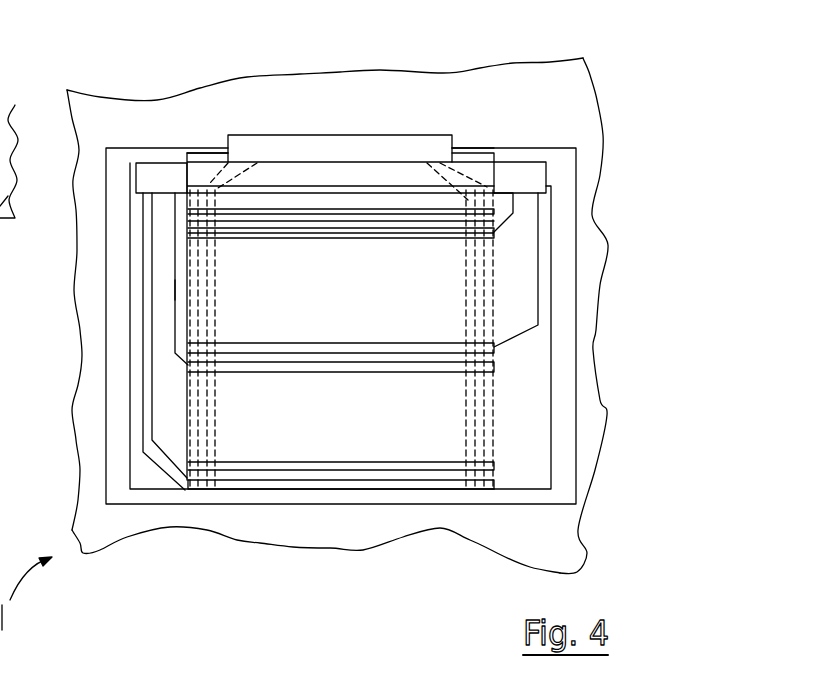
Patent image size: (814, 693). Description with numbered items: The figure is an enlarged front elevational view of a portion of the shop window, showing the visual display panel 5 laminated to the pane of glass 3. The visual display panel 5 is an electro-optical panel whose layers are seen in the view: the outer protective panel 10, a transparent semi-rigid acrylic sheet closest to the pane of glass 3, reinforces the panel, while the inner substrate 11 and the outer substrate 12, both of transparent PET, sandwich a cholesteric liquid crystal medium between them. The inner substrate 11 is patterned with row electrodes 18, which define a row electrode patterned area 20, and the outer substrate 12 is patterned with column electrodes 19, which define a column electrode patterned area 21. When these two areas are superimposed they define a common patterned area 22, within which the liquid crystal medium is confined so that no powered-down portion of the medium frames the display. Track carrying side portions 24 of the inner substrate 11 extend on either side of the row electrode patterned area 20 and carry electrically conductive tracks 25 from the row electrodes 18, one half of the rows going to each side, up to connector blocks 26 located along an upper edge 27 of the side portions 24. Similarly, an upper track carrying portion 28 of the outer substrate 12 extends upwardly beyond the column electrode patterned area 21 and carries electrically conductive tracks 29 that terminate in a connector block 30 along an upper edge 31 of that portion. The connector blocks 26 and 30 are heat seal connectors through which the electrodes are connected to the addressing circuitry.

The pane of glass 3 is at (262, 82).
The visual display panel 5 is at (322, 98).
The outer protective panel 10 is at (118, 160).
The inner substrate 11 is at (385, 442).
The outer substrate 12 is at (187, 423).
The row electrodes 18 is at (257, 235).
The column electrodes 19 is at (217, 323).
The row electrode patterned area 20 is at (232, 490).
The column electrode patterned area 21 is at (187, 290).
The common patterned area 22 is at (495, 443).
The track carrying side portions 24 is at (145, 480).
The electrically conductive tracks 25 is at (497, 343).
The connector blocks 26 is at (158, 173).
The upper edge 27 is at (548, 187).
The upper track carrying portion 28 is at (481, 158).
The electrically conductive tracks 29 is at (215, 185).
The connector block 30 is at (354, 140).
The upper edge 31 is at (488, 152).